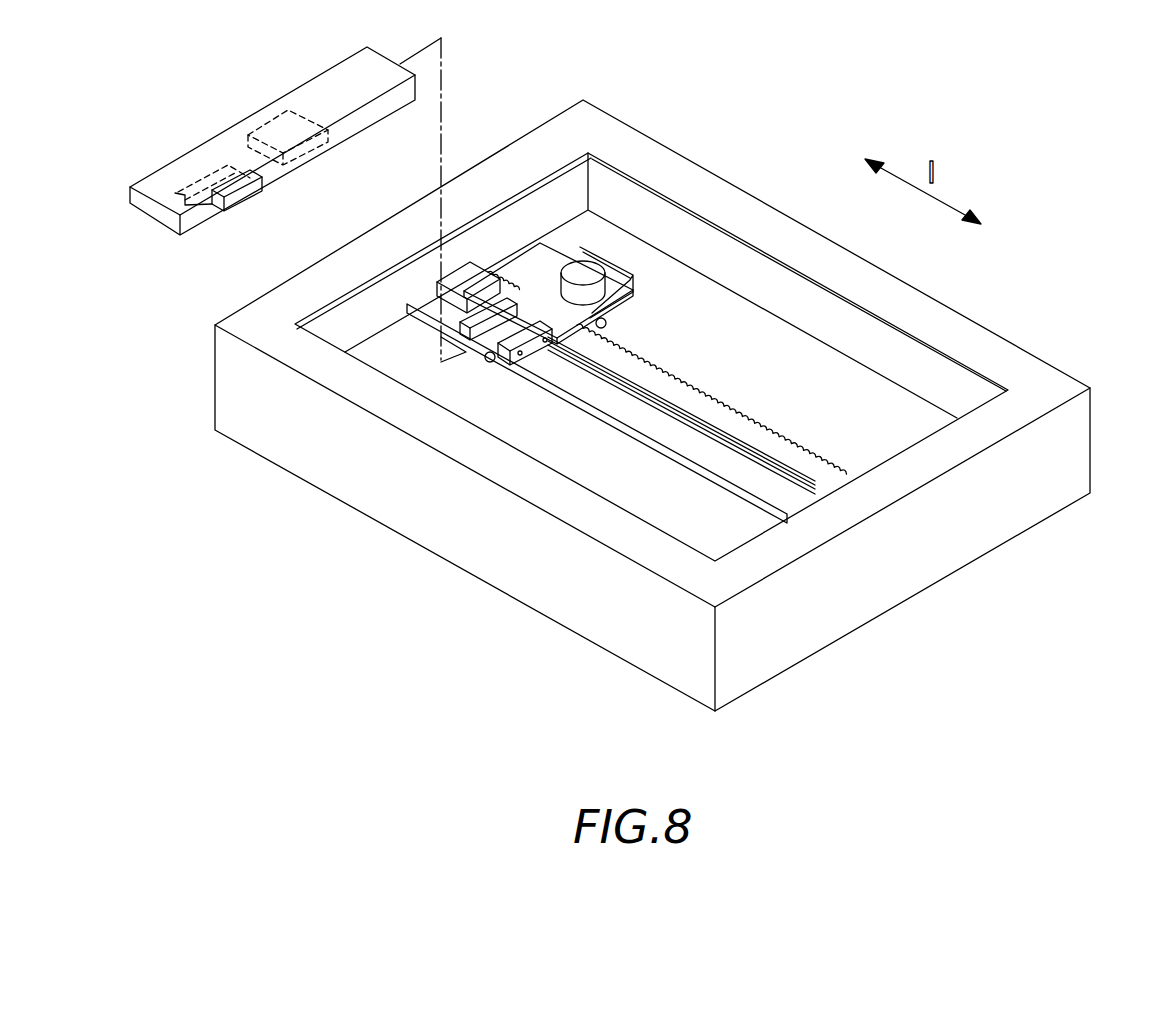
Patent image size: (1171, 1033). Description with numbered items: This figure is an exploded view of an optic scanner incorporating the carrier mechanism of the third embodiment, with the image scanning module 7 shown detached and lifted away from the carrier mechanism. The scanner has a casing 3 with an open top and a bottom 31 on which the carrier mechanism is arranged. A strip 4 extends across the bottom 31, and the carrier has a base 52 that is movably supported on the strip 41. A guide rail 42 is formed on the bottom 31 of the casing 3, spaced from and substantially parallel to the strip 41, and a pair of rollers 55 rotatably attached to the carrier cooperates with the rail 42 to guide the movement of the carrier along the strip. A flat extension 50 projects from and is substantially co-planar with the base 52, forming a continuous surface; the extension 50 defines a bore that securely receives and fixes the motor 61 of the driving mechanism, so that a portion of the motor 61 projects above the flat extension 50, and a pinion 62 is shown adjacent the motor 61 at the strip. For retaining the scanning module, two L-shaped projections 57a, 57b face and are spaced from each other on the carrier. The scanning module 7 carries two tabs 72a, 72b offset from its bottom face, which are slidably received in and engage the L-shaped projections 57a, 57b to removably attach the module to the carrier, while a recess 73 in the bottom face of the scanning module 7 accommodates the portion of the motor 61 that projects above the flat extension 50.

The casing 3 is at (1015, 503).
The bottom 31 is at (886, 432).
The strip 4 is at (703, 412).
The strip 41 is at (744, 421).
The guide rail 42 is at (645, 443).
The flat extension 50 is at (548, 309).
The base 52 is at (527, 311).
The rollers 55 is at (496, 342).
The L-shaped projection 57a is at (452, 320).
The L-shaped projection 57b is at (487, 358).
The motor 61 is at (592, 272).
The pinion gear 62 is at (613, 333).
The image scanning module 7 is at (230, 137).
The tab 72a is at (165, 207).
The tab 72b is at (216, 212).
The recess 73 is at (300, 160).